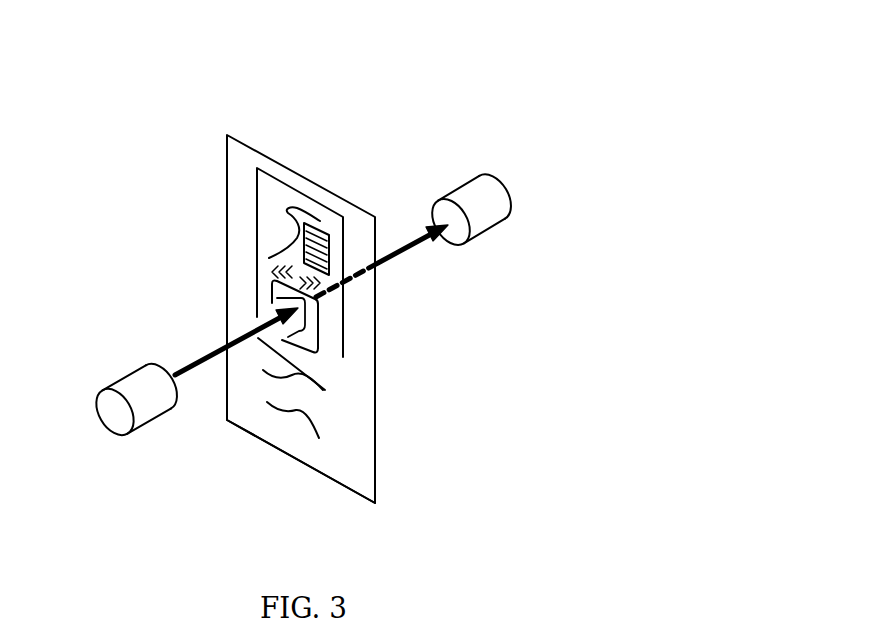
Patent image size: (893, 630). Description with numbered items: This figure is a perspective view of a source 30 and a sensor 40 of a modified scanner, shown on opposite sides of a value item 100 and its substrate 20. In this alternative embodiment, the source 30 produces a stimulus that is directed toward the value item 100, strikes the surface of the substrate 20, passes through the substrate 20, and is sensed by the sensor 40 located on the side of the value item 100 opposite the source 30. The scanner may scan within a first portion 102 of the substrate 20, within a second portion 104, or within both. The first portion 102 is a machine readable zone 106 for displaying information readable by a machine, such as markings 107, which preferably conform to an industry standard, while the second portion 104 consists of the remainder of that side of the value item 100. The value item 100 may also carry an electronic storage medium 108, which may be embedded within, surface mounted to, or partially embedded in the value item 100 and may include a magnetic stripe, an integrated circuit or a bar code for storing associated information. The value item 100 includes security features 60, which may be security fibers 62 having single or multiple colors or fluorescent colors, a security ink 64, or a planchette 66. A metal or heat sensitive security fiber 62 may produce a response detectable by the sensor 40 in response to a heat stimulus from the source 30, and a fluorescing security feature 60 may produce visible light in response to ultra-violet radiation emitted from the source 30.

The substrate 20 is at (360, 423).
The source 30 is at (125, 380).
The sensor 40 is at (467, 192).
The security feature 60 is at (277, 252).
The security fiber 62 is at (287, 205).
The security ink 64 is at (307, 380).
The planchette 66 is at (325, 334).
The value item 100 is at (242, 153).
The first portion 102 is at (257, 315).
The second portion 104 is at (353, 447).
The machine readable zone 106 is at (333, 212).
The markings 107 is at (270, 265).
The electronic storage medium 108 is at (330, 236).